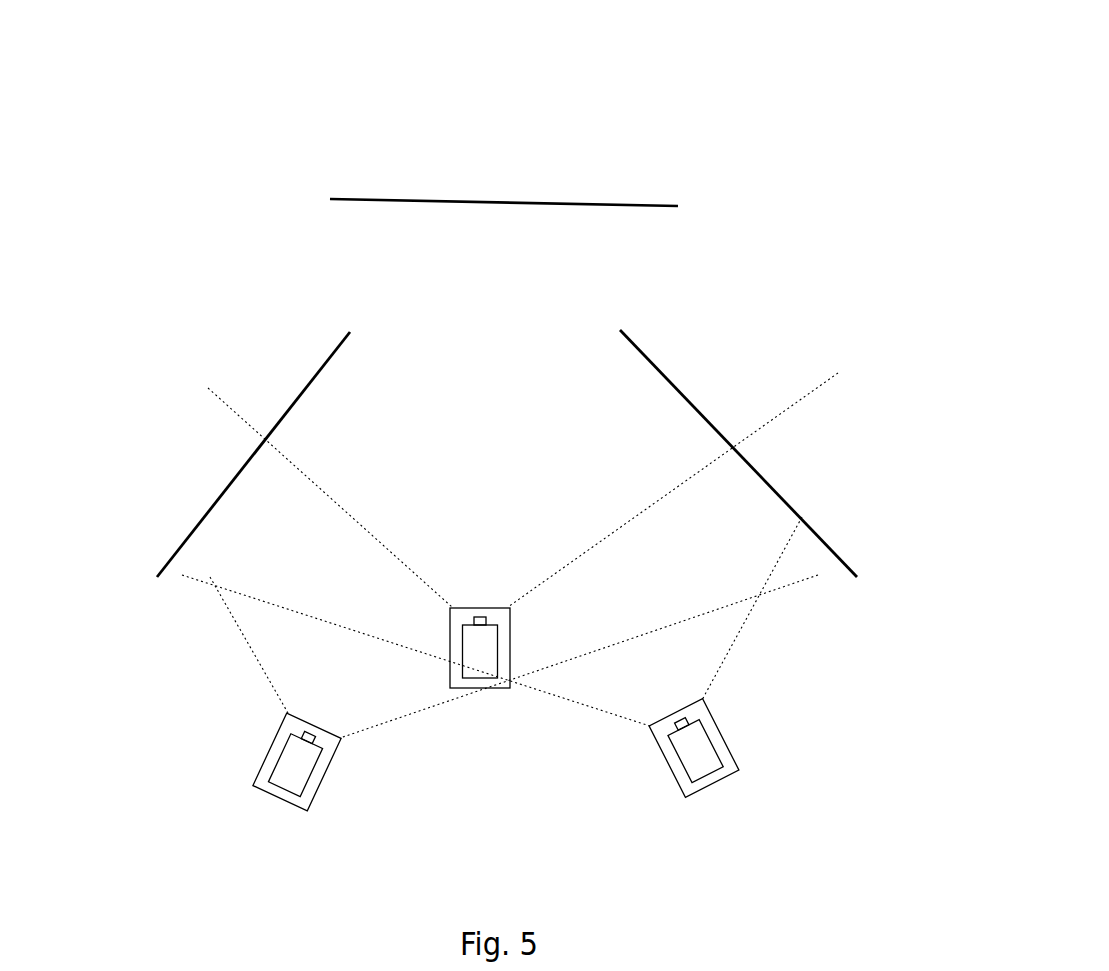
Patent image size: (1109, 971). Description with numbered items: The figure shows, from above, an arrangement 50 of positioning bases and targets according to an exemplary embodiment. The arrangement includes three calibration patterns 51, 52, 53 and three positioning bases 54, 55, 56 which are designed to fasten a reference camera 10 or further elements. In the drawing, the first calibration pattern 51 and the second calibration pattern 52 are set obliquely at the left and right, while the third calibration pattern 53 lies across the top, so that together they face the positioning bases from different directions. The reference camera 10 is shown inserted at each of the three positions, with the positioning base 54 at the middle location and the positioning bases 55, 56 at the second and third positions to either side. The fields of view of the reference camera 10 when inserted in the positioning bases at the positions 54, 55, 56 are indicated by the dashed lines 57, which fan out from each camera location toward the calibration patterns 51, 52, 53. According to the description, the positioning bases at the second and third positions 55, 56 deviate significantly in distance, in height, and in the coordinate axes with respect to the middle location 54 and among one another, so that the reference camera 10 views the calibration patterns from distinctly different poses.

The reference camera 10 is at (491, 743).
The arrangement / system 50 is at (803, 92).
The calibration pattern 51 is at (312, 378).
The calibration pattern 52 is at (677, 387).
The calibration pattern 53 is at (348, 199).
The positioning base 54 is at (465, 688).
The positioning base 55 is at (267, 760).
The positioning base 56 is at (708, 785).
The dashed lines 57 is at (228, 608).